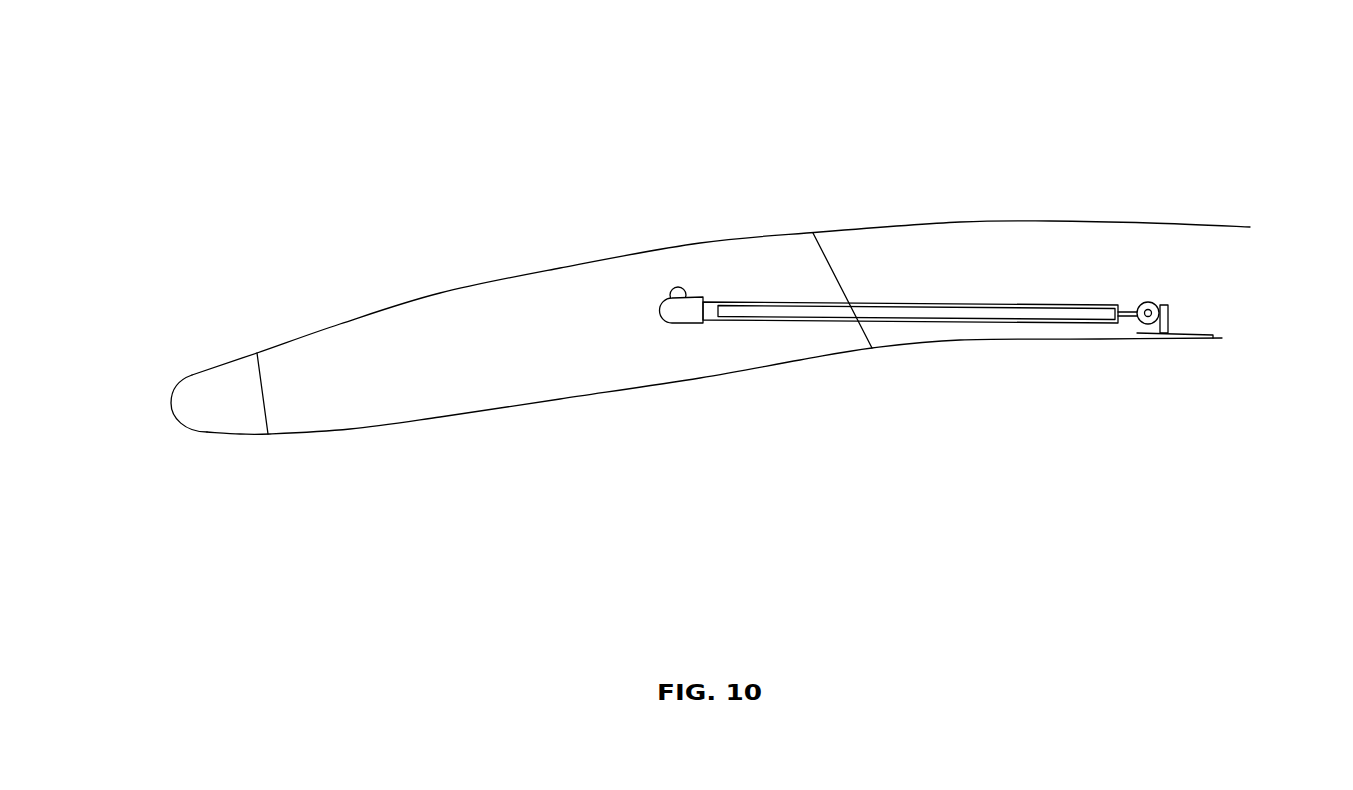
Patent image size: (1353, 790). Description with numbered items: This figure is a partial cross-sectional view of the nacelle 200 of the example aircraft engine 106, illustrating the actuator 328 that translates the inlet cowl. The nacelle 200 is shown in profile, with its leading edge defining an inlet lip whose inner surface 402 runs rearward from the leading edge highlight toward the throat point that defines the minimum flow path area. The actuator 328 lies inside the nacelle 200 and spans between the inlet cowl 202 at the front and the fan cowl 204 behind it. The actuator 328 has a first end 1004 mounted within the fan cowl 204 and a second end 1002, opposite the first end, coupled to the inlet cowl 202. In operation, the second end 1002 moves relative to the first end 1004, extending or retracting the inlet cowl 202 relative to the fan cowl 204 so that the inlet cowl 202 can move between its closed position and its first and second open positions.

The aircraft engine 106 is at (742, 265).
The nacelle 200 is at (696, 286).
The inlet cowl 202 is at (440, 307).
The fan cowl 204 is at (1187, 222).
The actuator 328 is at (937, 334).
The inner surface 402 is at (213, 435).
The second end 1002 is at (690, 323).
The first end 1004 is at (1137, 324).